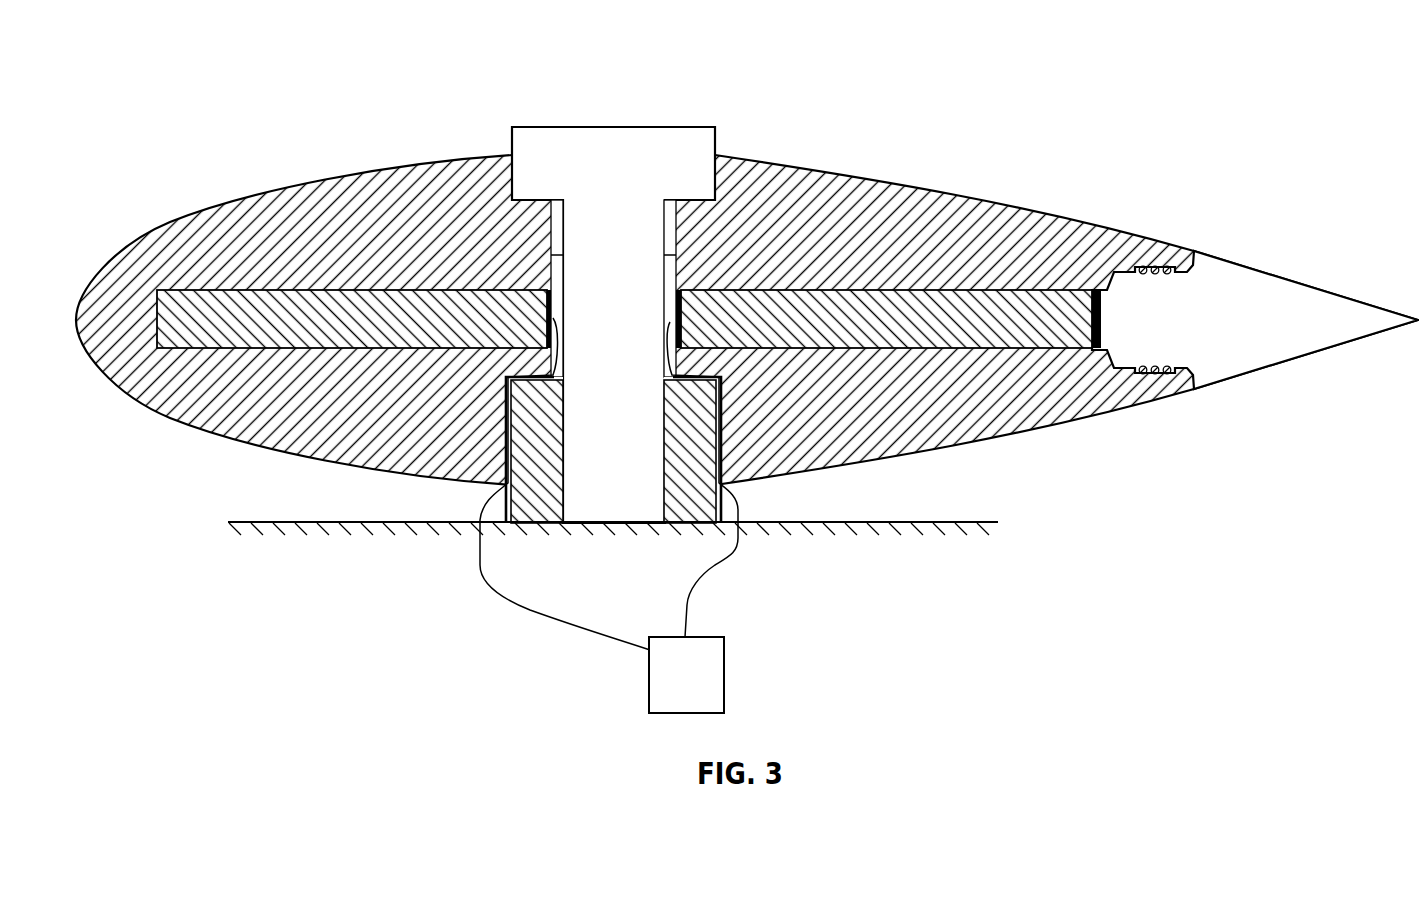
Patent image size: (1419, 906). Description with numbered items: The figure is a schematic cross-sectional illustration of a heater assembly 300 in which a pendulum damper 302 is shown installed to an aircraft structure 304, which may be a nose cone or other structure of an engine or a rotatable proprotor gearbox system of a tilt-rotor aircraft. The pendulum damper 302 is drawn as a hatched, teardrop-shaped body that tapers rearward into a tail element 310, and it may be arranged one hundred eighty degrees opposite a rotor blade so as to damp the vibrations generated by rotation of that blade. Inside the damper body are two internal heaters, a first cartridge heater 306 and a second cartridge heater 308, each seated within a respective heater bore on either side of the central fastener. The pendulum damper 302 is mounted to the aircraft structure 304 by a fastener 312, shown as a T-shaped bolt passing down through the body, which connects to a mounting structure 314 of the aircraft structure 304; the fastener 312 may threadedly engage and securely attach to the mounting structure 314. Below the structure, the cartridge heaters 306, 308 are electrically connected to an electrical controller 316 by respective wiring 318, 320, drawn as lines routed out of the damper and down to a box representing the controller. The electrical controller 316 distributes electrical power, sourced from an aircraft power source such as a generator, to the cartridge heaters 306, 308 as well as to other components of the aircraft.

The heater assembly 300 is at (747, 373).
The pendulum damper 302 is at (788, 165).
The aircraft structure 304 is at (918, 524).
The first cartridge heater 306 is at (242, 333).
The second cartridge heater 308 is at (973, 300).
The tail element 310 is at (1265, 285).
The fastener 312 is at (604, 142).
The mounting structure 314 is at (541, 510).
The electrical controller 316 is at (716, 665).
The wiring 318 is at (560, 628).
The wiring 320 is at (733, 553).